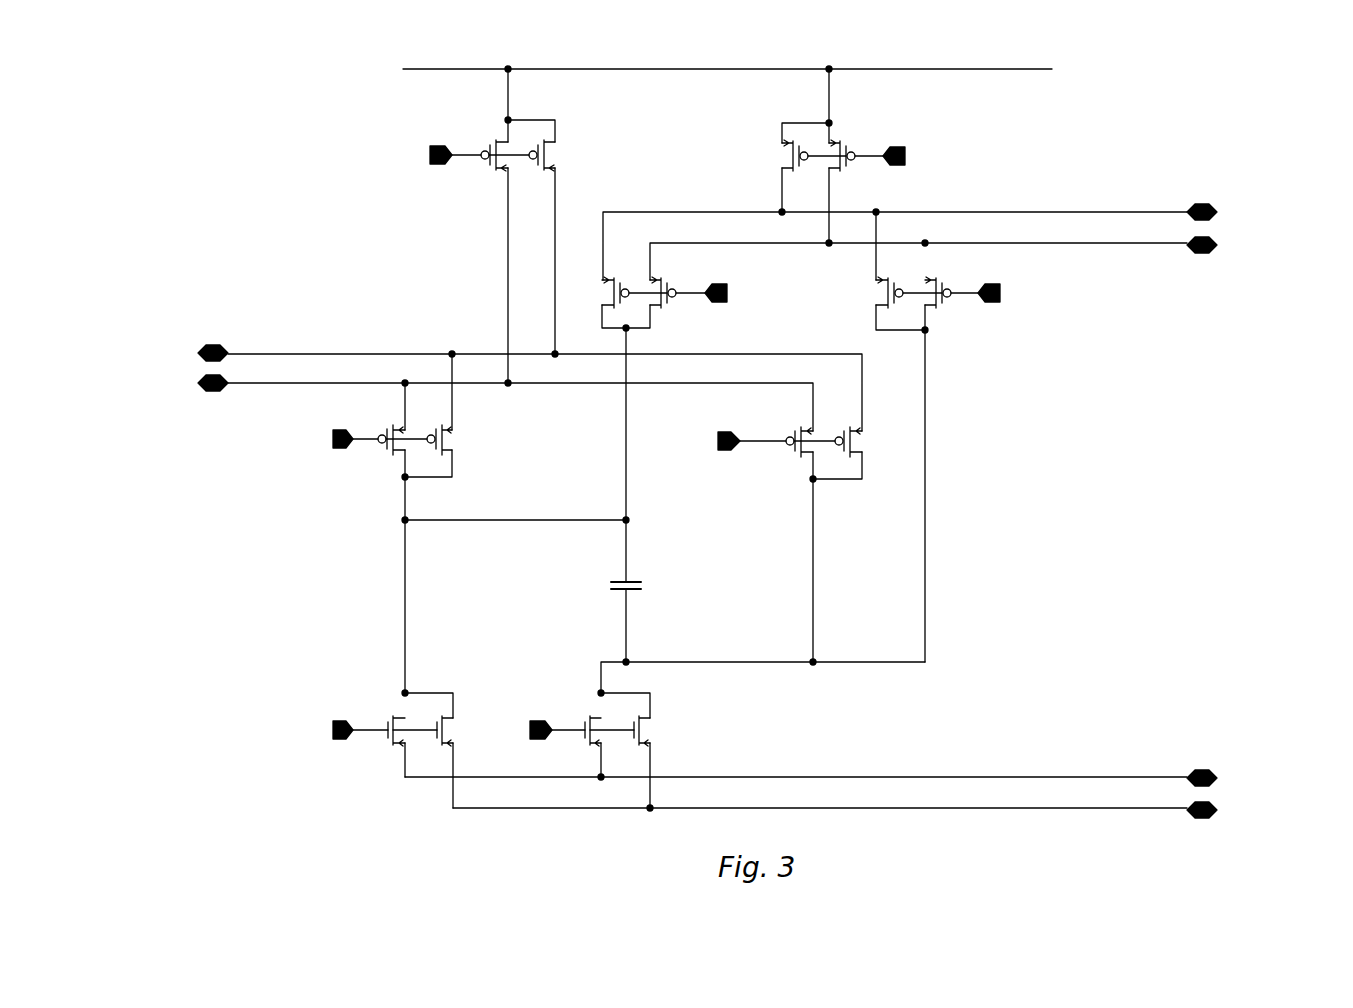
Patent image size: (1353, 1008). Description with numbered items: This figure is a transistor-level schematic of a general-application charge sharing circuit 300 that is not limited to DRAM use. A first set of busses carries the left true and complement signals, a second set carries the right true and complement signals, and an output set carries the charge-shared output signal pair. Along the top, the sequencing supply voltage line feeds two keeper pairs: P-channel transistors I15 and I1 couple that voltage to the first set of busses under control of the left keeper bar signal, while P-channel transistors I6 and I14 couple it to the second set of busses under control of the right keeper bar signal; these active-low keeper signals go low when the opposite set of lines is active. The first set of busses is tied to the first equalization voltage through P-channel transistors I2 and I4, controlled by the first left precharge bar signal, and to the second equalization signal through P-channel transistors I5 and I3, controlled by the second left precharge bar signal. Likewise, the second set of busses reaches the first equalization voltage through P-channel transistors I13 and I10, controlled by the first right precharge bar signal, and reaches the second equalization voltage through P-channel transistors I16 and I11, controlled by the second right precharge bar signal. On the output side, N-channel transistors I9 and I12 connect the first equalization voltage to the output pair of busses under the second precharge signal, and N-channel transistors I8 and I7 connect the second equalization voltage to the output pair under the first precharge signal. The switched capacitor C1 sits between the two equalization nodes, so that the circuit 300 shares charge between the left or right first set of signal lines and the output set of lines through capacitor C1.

The charge sharing circuit 300 is at (192, 85).
The P-channel transistor I1 is at (537, 162).
The P-channel transistor I2 is at (386, 445).
The P-channel transistor I3 is at (843, 447).
The P-channel transistor I4 is at (435, 445).
The P-channel transistor I5 is at (794, 454).
The P-channel transistor I6 is at (801, 162).
The N-channel transistor I7 is at (631, 736).
The N-channel transistor I8 is at (583, 736).
The N-channel transistor I9 is at (386, 736).
The P-channel transistor I10 is at (671, 284).
The P-channel transistor I11 is at (949, 282).
The N-channel transistor I12 is at (434, 745).
The P-channel transistor I13 is at (619, 284).
The P-channel transistor I14 is at (854, 162).
The P-channel transistor I15 is at (480, 162).
The P-channel transistor I16 is at (894, 284).
The capacitor C1 is at (639, 596).